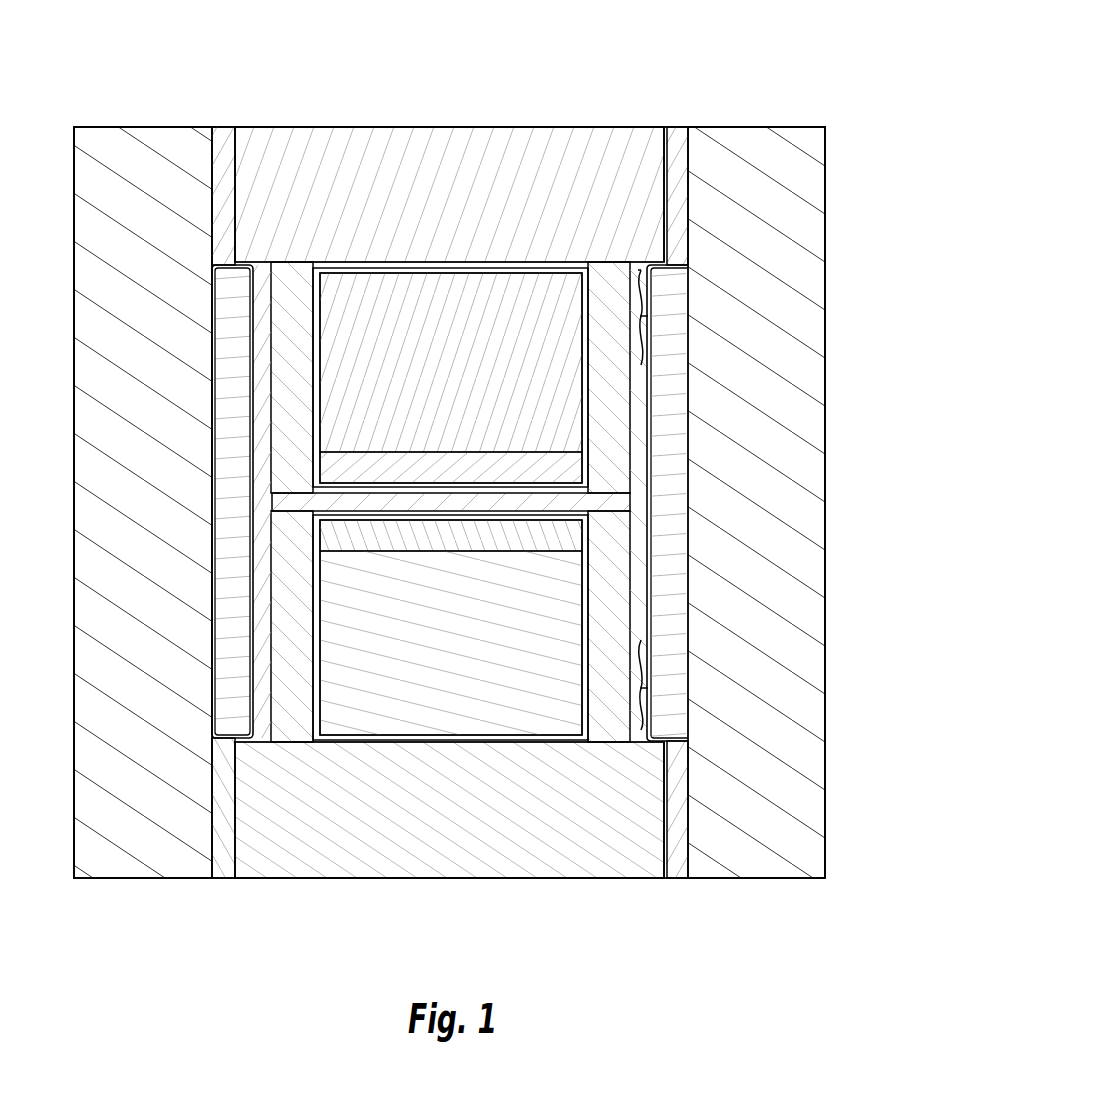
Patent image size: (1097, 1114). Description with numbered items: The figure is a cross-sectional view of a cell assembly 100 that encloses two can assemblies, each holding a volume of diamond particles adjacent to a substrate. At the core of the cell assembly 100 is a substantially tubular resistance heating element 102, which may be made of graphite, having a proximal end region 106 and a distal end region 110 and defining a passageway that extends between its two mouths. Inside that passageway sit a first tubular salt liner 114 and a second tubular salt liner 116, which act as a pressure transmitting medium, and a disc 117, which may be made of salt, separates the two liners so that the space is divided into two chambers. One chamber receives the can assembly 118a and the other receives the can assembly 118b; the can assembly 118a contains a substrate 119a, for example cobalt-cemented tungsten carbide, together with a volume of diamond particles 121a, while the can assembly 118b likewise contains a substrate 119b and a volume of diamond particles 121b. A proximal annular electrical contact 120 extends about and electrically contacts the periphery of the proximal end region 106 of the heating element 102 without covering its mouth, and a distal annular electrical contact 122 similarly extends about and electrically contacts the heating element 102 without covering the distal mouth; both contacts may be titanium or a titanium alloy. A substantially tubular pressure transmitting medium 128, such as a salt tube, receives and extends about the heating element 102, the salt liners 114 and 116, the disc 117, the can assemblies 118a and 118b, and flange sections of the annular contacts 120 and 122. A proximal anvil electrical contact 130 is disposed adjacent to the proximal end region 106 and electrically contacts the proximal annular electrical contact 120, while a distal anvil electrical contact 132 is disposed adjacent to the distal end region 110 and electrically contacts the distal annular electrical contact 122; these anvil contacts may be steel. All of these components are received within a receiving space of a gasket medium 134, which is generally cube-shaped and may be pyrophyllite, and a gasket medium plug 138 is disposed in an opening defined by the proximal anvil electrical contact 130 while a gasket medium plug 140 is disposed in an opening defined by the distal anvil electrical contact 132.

The cell assembly 100 is at (810, 67).
The substantially tubular resistance heating element 102 is at (637, 552).
The proximal end region 106 is at (650, 315).
The distal end region 110 is at (650, 688).
The first tubular salt liner 114 is at (608, 392).
The second tubular salt liner 116 is at (612, 600).
The disc 117 is at (620, 505).
The can assembly 118a is at (590, 383).
The can assembly 118b is at (590, 635).
The substrate 119a is at (476, 385).
The substrate 119b is at (476, 652).
The proximal annular electrical contact 120 is at (688, 267).
The volume of diamond particles 121a is at (476, 482).
The volume of diamond particles 121b is at (476, 546).
The distal annular electrical contact 122 is at (664, 743).
The substantially tubular pressure transmitting medium 128 is at (670, 415).
The proximal anvil electrical contact 130 is at (675, 142).
The distal anvil electrical contact 132 is at (677, 825).
The gasket medium 134 is at (797, 138).
The gasket medium plug 138 is at (470, 195).
The gasket medium plug 140 is at (470, 832).